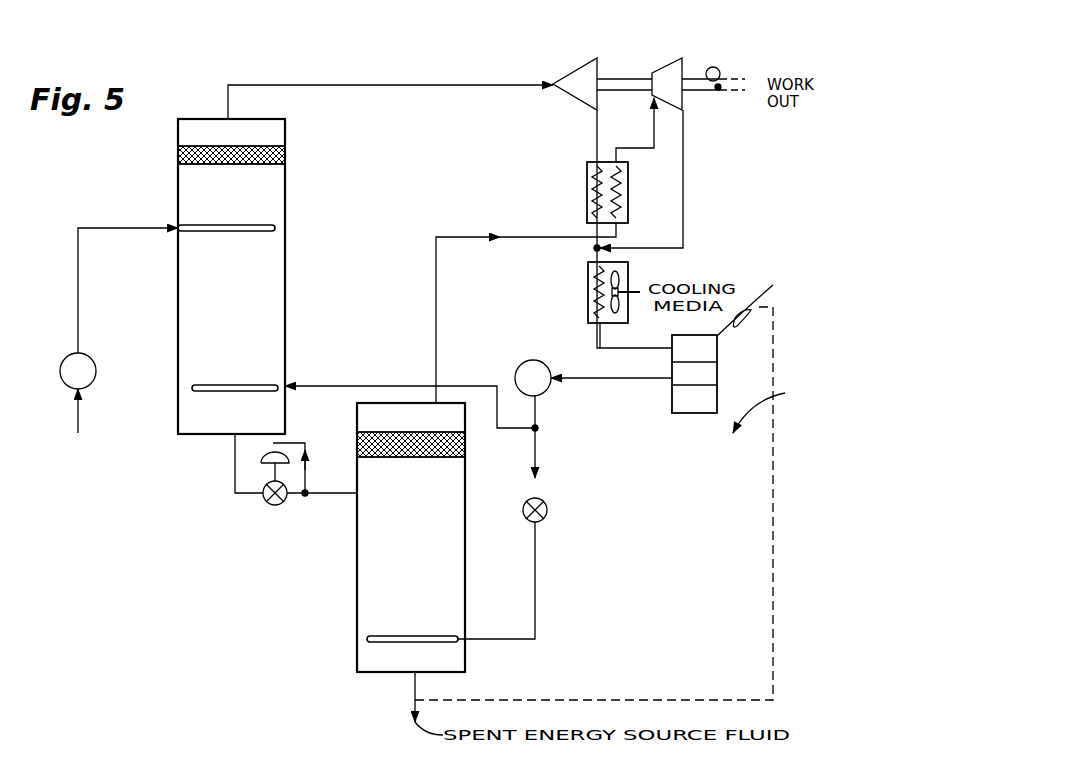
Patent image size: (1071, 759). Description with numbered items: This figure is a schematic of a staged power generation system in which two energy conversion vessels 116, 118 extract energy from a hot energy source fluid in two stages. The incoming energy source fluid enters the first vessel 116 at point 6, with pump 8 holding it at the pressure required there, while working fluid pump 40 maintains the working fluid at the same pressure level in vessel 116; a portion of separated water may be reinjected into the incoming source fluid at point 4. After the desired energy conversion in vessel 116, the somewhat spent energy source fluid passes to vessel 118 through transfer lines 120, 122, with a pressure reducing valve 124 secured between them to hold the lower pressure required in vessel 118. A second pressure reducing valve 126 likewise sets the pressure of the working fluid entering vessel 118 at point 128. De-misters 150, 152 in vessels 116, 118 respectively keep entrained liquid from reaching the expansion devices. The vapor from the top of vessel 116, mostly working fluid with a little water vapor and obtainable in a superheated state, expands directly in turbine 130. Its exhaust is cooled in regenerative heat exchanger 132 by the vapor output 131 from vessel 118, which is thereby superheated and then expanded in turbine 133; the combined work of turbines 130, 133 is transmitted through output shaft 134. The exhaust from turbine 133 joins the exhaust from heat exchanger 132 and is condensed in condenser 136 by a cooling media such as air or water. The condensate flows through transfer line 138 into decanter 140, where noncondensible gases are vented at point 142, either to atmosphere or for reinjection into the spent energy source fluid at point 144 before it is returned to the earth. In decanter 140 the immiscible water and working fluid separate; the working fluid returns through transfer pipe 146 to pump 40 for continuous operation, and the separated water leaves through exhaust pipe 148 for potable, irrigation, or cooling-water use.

The point 4 is at (82, 425).
The point 6 is at (172, 234).
The pump 8 is at (96, 371).
The working fluid pump 40 is at (547, 367).
The energy conversion vessel 116 is at (182, 325).
The energy conversion vessel 118 is at (357, 590).
The transfer line 120 is at (233, 480).
The transfer line 122 is at (305, 498).
The pressure reducing valve 124 is at (264, 502).
The pressure reducing valve 126 is at (549, 507).
The point 128 is at (435, 636).
The turbine 130 is at (575, 70).
The vapor output 131 is at (438, 317).
The regenerative heat exchanger 132 is at (587, 203).
The turbine 133 is at (660, 70).
The output shaft 134 is at (700, 96).
The condenser 136 is at (588, 292).
The transfer line 138 is at (617, 348).
The decanter 140 is at (718, 351).
The point 142 is at (768, 297).
The point 144 is at (413, 693).
The transfer pipe 146 is at (588, 384).
The exhaust pipe 148 is at (781, 405).
The de-mister 150 is at (286, 161).
The de-mister 152 is at (464, 446).